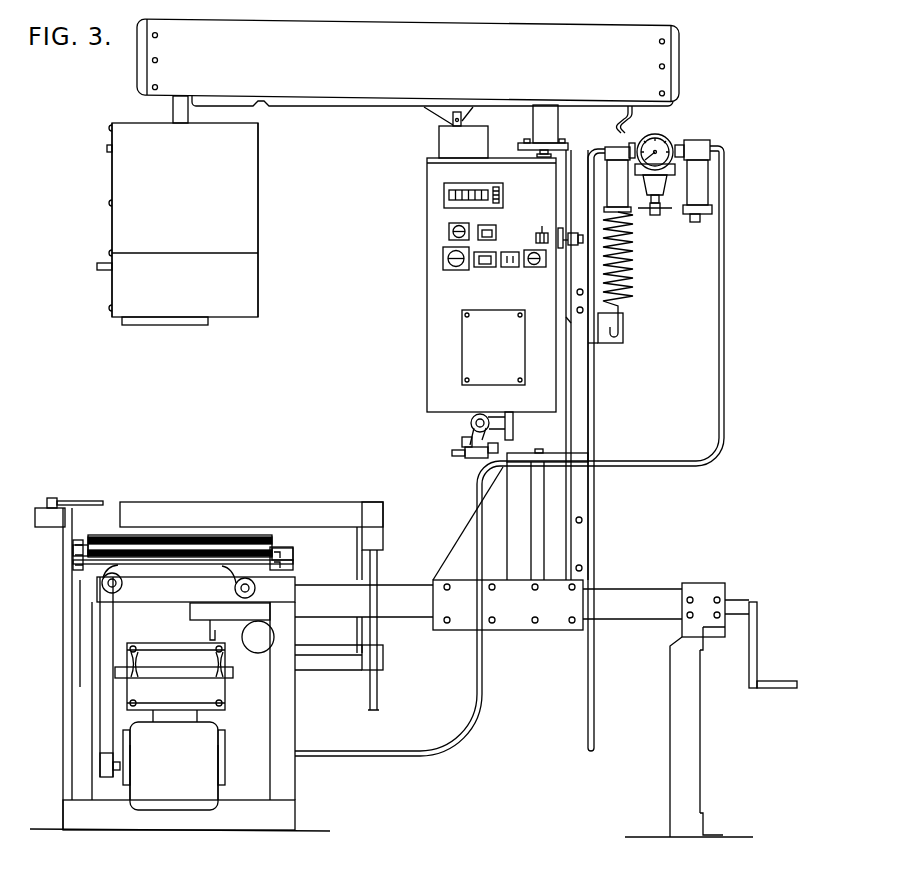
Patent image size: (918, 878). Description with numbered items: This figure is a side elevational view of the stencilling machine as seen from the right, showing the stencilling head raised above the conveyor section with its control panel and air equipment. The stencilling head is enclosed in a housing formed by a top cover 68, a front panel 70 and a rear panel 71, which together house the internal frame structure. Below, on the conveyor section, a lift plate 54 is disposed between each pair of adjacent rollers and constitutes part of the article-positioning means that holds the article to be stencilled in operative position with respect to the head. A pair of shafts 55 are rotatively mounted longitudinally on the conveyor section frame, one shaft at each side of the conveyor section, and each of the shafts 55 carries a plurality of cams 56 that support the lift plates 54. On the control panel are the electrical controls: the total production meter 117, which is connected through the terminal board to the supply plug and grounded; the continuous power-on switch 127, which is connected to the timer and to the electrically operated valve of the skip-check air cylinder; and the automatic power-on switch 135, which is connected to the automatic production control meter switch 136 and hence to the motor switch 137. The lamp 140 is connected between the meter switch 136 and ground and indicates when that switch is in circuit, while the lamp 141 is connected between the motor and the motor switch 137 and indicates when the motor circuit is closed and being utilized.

The lift plate 54 is at (97, 578).
The shafts 55 is at (115, 590).
The cams 56 is at (123, 582).
The top cover 68 is at (192, 185).
The front panel 70 is at (112, 180).
The rear panel 71 is at (258, 183).
The total production meter 117 is at (444, 189).
The continuous power-on switch 127 is at (443, 258).
The automatic power-on switch 135 is at (534, 267).
The meter switch 136 is at (542, 226).
The motor switch 137 is at (449, 231).
The lamp 140 is at (488, 226).
The lamp 141 is at (486, 267).